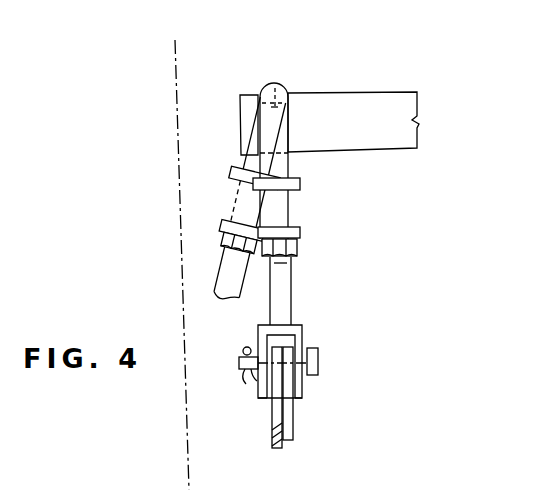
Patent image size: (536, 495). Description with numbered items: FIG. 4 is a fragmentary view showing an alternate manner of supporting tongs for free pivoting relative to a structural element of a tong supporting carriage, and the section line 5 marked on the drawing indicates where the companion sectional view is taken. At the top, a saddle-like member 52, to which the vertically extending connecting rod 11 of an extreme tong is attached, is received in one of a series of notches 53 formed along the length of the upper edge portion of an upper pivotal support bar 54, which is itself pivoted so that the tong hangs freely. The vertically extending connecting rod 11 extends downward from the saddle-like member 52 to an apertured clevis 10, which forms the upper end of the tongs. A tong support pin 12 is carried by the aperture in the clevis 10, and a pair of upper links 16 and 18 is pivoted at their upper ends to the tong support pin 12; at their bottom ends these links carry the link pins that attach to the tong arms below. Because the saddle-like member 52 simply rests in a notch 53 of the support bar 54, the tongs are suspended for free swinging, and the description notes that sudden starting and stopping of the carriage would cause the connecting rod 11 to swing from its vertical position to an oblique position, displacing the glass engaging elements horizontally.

The section line 5- 5 is at (208, 64).
The apertured clevis 10 is at (307, 333).
The vertically extending connecting rod 11 is at (242, 280).
The tong support pin 12 is at (319, 358).
The upper link 16 is at (272, 411).
The upper link 18 is at (293, 415).
The saddle-like member 52 is at (258, 139).
The notch 53 is at (277, 98).
The upper pivotal support bar 54 is at (367, 103).